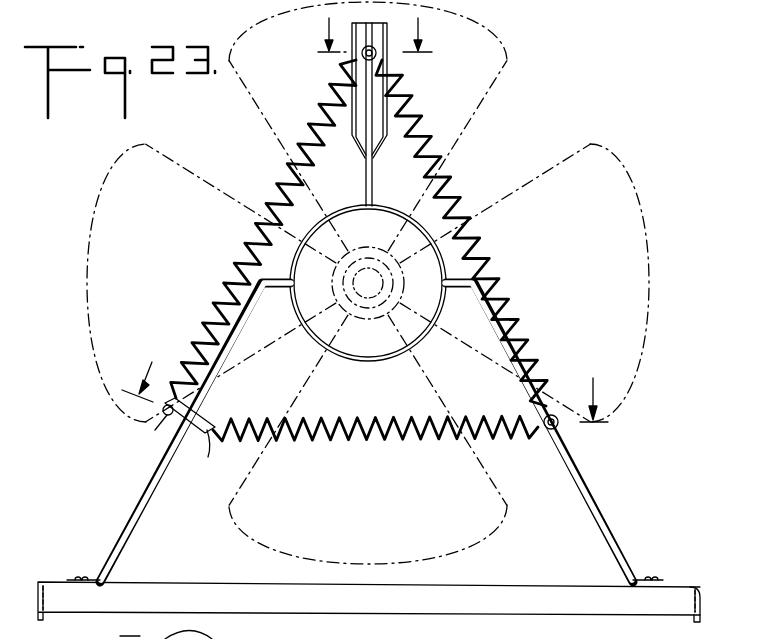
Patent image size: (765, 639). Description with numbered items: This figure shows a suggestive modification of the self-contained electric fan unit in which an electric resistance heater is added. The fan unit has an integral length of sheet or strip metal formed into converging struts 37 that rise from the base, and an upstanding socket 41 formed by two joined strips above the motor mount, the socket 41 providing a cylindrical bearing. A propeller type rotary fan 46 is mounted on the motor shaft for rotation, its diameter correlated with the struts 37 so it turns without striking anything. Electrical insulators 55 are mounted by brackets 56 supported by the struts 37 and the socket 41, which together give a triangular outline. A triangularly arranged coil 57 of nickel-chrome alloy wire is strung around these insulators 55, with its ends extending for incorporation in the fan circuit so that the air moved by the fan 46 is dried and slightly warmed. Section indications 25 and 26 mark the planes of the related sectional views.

The section line 25 is at (370, 384).
The section line 26 is at (372, 34).
The converging struts 37 is at (150, 495).
The upstanding socket 41 is at (360, 137).
The propeller type rotary fan 46 is at (640, 256).
The electrical insulators 55 is at (378, 56).
The brackets 56 is at (150, 631).
The triangularly arranged coil 57 is at (453, 189).